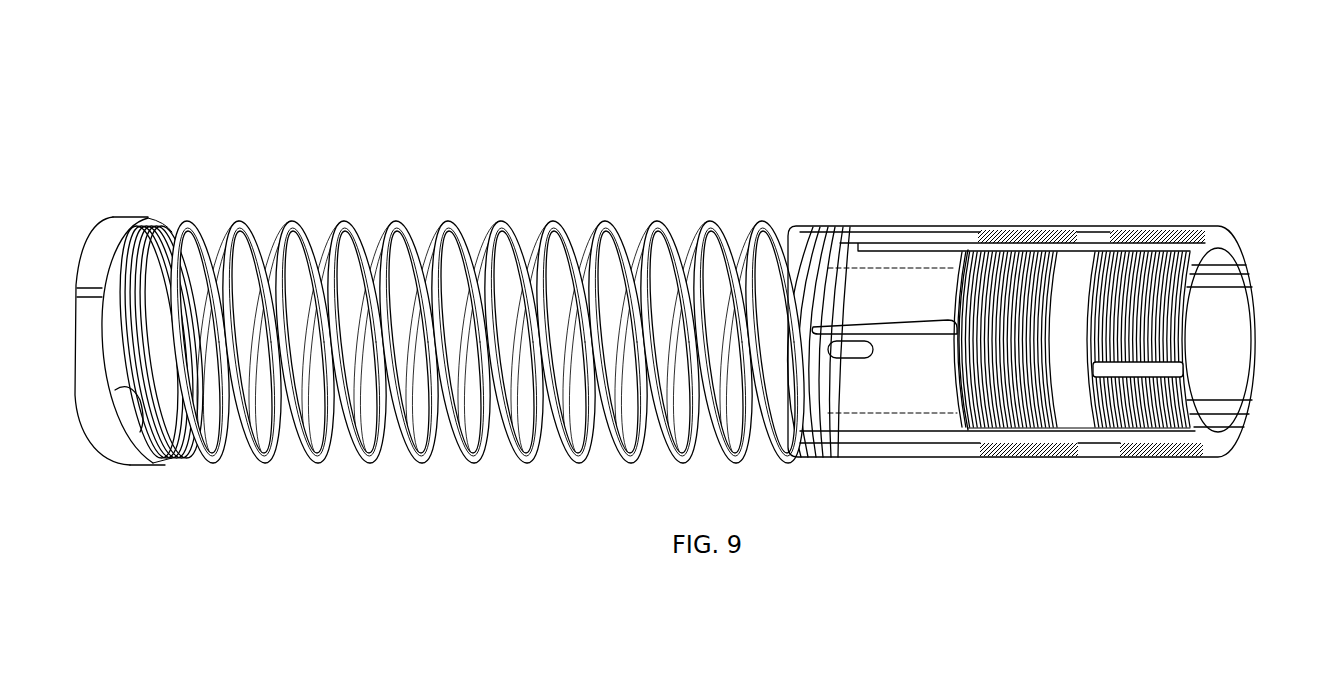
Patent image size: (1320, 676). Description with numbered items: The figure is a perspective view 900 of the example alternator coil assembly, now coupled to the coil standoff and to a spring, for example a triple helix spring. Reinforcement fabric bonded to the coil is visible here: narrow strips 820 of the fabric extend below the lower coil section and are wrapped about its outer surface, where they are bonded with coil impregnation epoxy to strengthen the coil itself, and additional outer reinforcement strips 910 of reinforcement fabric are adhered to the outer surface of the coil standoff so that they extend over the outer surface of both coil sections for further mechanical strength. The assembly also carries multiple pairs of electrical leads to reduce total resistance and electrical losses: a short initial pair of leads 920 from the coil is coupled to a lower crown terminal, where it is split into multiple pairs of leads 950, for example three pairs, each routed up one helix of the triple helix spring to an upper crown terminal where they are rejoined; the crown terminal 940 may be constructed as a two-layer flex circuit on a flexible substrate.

The perspective view 900 is at (1152, 108).
The crown terminal 940 is at (162, 230).
The multiple pairs of leads 950 is at (400, 240).
The initial pair of leads 920 is at (955, 226).
The narrow strips 820 is at (1150, 229).
The outer reinforcement strips 910 is at (1198, 246).